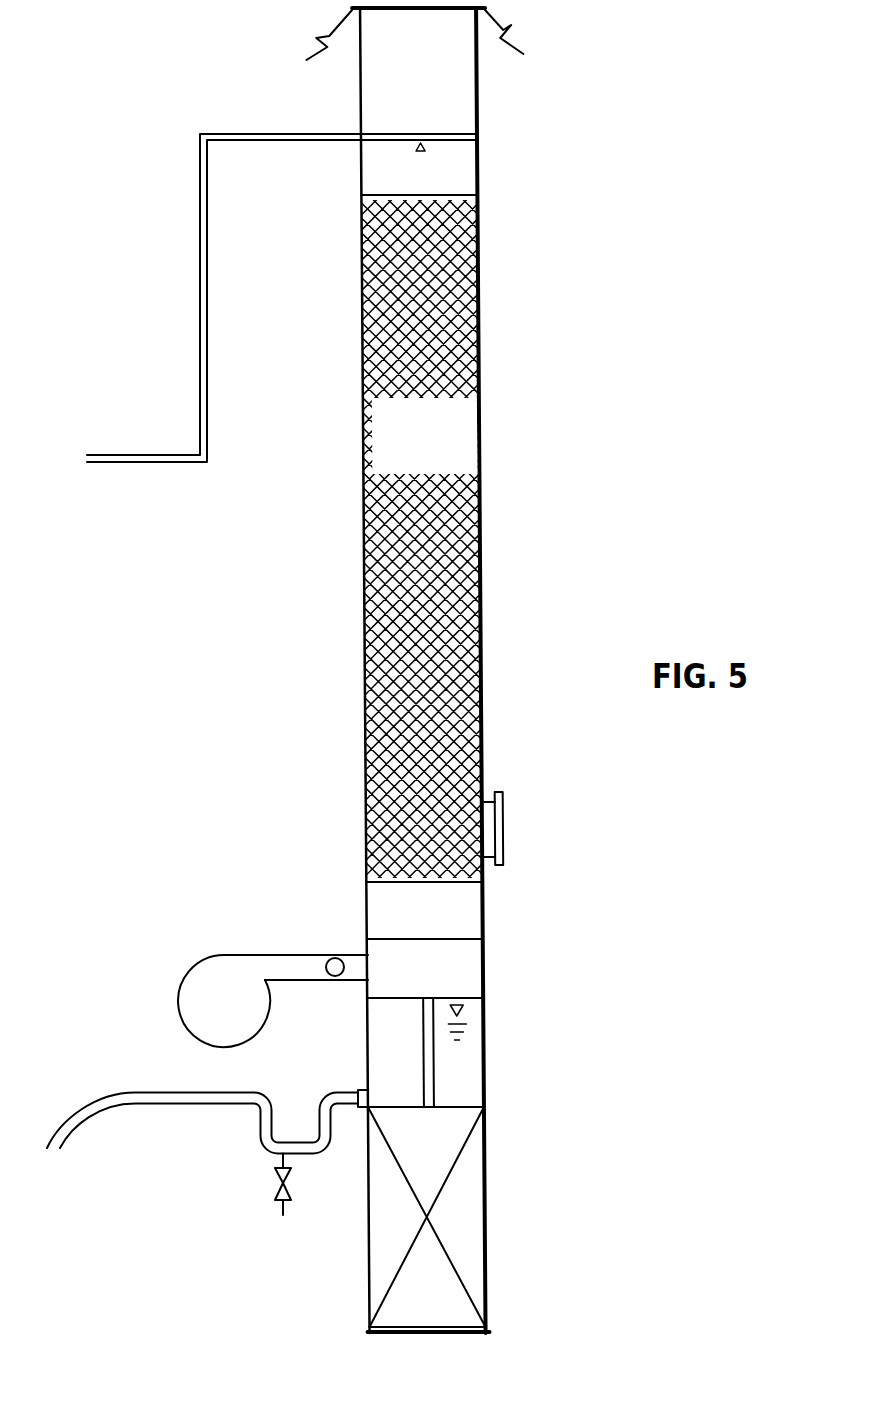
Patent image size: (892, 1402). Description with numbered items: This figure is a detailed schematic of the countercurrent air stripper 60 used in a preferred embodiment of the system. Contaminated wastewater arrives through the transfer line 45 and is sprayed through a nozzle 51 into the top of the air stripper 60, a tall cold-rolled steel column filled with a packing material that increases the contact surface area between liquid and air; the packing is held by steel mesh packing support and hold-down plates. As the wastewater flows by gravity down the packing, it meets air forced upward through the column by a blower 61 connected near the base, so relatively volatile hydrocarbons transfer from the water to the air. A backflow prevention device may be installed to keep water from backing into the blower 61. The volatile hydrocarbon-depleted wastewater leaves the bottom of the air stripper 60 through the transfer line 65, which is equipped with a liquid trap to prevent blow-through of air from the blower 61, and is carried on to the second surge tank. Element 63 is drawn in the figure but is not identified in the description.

The transfer line 45 is at (200, 287).
The nozzle 51 is at (423, 150).
The countercurrent air stripper 60 is at (476, 368).
The blower 61 is at (205, 958).
The air inlet chamber 63 is at (392, 967).
The transfer line 65 is at (190, 1103).